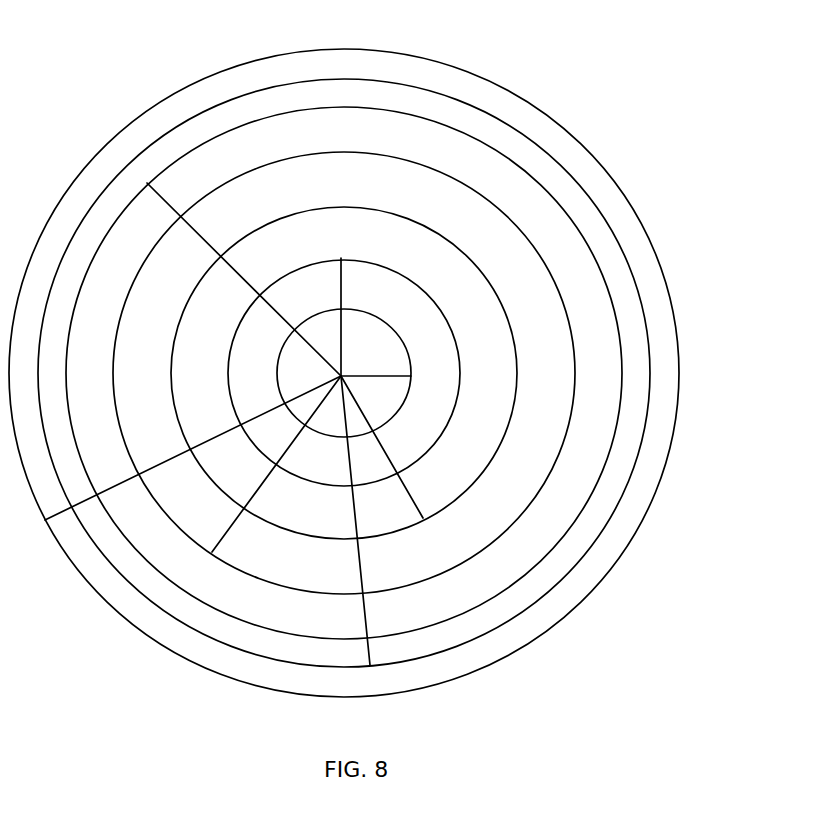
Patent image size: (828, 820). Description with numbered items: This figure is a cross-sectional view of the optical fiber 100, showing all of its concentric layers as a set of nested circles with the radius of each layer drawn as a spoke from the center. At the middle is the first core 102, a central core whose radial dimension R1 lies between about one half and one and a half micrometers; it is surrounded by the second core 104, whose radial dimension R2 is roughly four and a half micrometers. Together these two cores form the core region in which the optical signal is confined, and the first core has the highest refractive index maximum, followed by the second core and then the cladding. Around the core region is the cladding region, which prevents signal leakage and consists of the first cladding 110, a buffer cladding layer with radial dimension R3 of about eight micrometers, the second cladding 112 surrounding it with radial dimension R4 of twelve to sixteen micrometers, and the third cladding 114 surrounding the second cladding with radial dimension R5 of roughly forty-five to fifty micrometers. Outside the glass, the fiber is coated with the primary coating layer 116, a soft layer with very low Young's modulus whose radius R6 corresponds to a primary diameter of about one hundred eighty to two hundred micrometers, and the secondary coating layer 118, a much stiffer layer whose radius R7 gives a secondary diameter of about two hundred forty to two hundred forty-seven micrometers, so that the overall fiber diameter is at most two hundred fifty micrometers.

The optical fiber 100 is at (113, 43).
The first core 102 is at (388, 320).
The second core 104 is at (463, 357).
The first cladding 110 is at (515, 395).
The second cladding 112 is at (567, 438).
The third cladding 114 is at (590, 503).
The primary coating layer 116 is at (593, 551).
The secondary coating layer 118 is at (594, 593).
The radial dimension of the first core R1 is at (376, 390).
The radial dimension of the second core R2 is at (357, 317).
The radial dimension of the first cladding R3 is at (390, 447).
The radial dimension of the second cladding R4 is at (276, 464).
The radial dimension of the third cladding R5 is at (244, 277).
The radius of the primary coating layer R6 is at (370, 520).
The radius of the secondary coating layer R7 is at (193, 459).